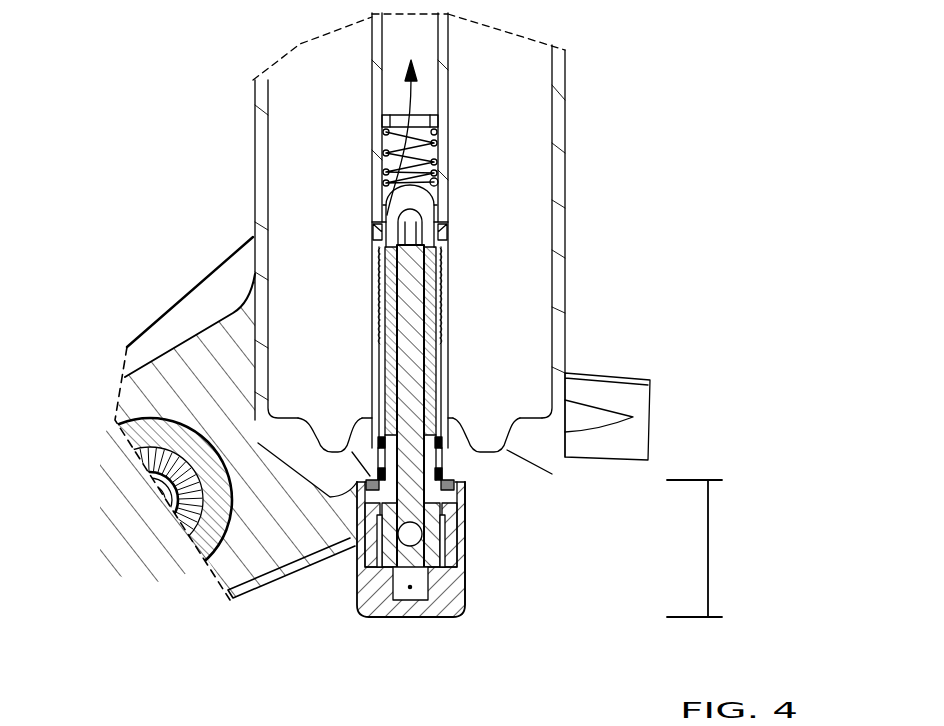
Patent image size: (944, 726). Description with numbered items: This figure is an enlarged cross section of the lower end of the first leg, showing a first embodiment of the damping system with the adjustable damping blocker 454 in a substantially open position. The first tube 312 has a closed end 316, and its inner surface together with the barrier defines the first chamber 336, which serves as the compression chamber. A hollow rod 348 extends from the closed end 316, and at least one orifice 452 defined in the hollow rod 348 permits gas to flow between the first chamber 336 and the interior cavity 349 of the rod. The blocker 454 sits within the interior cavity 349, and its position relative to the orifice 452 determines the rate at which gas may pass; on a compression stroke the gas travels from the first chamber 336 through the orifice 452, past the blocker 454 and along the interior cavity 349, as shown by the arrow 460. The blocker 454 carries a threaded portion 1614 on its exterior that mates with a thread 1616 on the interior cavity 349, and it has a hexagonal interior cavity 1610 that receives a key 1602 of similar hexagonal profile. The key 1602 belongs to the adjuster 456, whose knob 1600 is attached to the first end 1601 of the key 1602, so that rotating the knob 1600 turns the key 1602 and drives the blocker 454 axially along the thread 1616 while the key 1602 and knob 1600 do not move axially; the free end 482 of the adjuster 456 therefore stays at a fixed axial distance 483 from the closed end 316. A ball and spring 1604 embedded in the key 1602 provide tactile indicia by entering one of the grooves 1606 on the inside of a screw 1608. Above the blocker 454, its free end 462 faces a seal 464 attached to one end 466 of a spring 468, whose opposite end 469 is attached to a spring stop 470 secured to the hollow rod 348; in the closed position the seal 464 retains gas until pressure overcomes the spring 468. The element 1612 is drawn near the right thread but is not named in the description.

The first tube 312 is at (566, 345).
The closed end 316 is at (447, 477).
The first chamber 336 is at (338, 159).
The hollow rod 348 is at (450, 62).
The interior cavity 349 is at (397, 42).
The orifice 452 is at (373, 228).
The adjustable damping blocker 454 is at (441, 212).
The adjuster 456 is at (463, 577).
The arrow 460 is at (409, 96).
The free end 462 is at (441, 194).
The seal 464 is at (441, 186).
The end of spring 466 is at (441, 174).
The spring 468 is at (443, 145).
The opposite end of spring 469 is at (385, 132).
The spring stop 470 is at (450, 90).
The free end of adjuster 482 is at (446, 620).
The fixed axial distance 483 is at (708, 548).
The knob 1600 is at (364, 600).
The first end of key 1601 is at (403, 594).
The key 1602 is at (392, 553).
The ball and spring 1604 is at (423, 529).
The grooves 1606 is at (441, 552).
The screw 1608 is at (441, 345).
The interior cavity 1610 is at (449, 232).
The right thread 1612 is at (441, 280).
The threaded portion 1614 is at (380, 266).
The thread 1616 is at (382, 288).